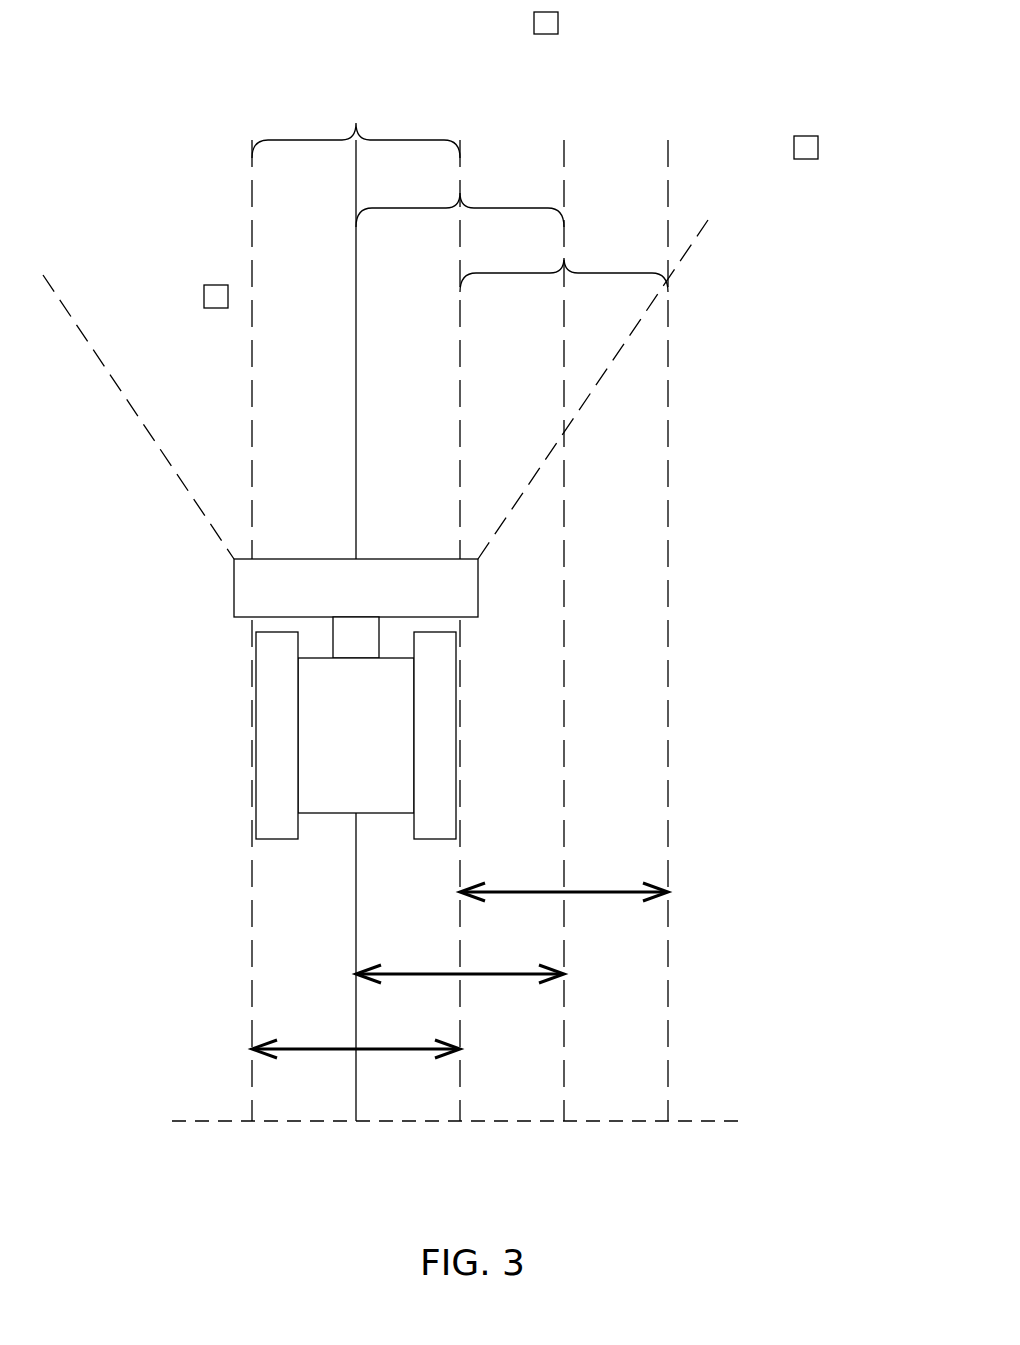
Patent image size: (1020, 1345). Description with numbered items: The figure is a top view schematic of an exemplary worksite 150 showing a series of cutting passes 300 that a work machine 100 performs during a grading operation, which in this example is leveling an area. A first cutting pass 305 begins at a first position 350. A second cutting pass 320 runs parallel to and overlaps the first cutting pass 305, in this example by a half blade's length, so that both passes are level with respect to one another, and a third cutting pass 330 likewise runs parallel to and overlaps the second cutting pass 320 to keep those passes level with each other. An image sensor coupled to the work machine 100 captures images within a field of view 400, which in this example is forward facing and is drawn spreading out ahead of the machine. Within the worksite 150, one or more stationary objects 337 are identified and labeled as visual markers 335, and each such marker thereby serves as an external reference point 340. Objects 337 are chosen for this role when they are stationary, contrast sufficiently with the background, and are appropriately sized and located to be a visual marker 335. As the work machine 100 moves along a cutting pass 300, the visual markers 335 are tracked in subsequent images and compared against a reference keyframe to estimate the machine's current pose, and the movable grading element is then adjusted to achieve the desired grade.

The work machine 100 is at (380, 765).
The worksite 150 is at (704, 42).
The cutting passes 300 is at (460, 606).
The first cutting pass 305 is at (314, 1047).
The second cutting pass 320 is at (421, 972).
The third cutting pass 330 is at (530, 890).
The visual markers 335 is at (216, 287).
The stationary objects 337 is at (537, 30).
The external reference point 340 is at (805, 152).
The first position 350 is at (432, 1122).
The field of view 400 is at (157, 445).